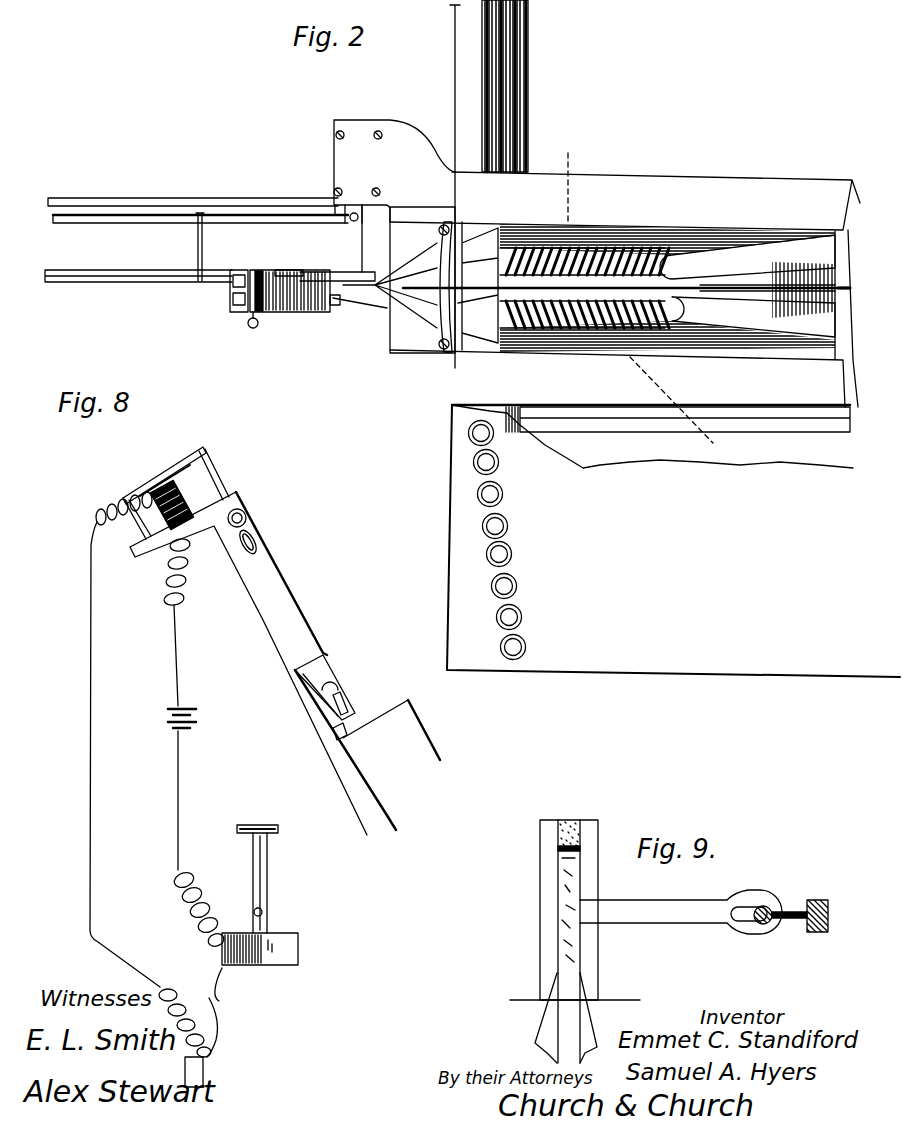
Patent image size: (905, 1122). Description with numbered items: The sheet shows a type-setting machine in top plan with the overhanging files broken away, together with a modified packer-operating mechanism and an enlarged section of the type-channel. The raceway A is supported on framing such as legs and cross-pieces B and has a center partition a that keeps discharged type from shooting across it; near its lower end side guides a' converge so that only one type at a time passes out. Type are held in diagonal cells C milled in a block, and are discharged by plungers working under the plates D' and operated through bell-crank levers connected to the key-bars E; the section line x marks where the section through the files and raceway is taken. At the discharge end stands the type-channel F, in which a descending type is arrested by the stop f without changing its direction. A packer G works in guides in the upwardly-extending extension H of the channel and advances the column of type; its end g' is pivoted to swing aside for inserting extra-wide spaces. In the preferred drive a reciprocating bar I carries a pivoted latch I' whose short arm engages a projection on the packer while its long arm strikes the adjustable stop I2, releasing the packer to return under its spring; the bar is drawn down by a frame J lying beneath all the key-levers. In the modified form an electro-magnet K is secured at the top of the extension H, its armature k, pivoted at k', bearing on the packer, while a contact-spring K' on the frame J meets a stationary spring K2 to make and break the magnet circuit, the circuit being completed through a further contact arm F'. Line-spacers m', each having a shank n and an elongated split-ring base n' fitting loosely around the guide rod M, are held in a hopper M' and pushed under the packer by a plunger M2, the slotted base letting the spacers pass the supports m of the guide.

In FIG. 2, the plates D' is at (645, 424).
In FIG. 2, the cross-pieces B is at (401, 186).
In FIG. 2, the key-bars E is at (528, 120).
In FIG. 8, the key-bars E is at (268, 901).
In FIG. 2, the section line x x is at (640, 298).
In FIG. 2, the side guides a' is at (478, 286).
In FIG. 9, the side guides a' is at (571, 1018).
In FIG. 2, the raceway A is at (651, 290).
In FIG. 9, the raceway A is at (573, 1018).
In FIG. 2, the cells C is at (667, 287).
In FIG. 2, the center partition a is at (767, 282).
In FIG. 2, the plunger M2 is at (168, 195).
In FIG. 9, the plunger M2 is at (818, 900).
In FIG. 2, the guide rod M is at (200, 230).
In FIG. 9, the guide rod M is at (763, 931).
In FIG. 2, the supports m is at (322, 199).
In FIG. 9, the supports m is at (789, 926).
In FIG. 2, the packer G is at (241, 270).
In FIG. 8, the packer G is at (320, 672).
In FIG. 2, the extension of the type-channel H is at (278, 312).
In FIG. 8, the extension of the type-channel H is at (283, 573).
In FIG. 2, the hopper M' is at (291, 261).
In FIG. 2, the line-spacers m' is at (360, 238).
In FIG. 9, the line-spacers m' is at (681, 917).
In FIG. 2, the shank n is at (223, 296).
In FIG. 9, the shank n is at (673, 895).
In FIG. 2, the reciprocating bar I is at (221, 317).
In FIG. 2, the latch I' is at (251, 333).
In FIG. 8, the latch I' is at (246, 505).
In FIG. 2, the type-channel F is at (337, 303).
In FIG. 9, the type-channel F is at (550, 910).
In FIG. 2, the frame J is at (381, 308).
In FIG. 8, the frame J is at (277, 957).
In FIG. 8, the armature k is at (176, 488).
In FIG. 8, the armature pivot k' is at (125, 731).
In FIG. 8, the electro-magnet K is at (172, 504).
In FIG. 8, the adjustable stop I2 is at (258, 535).
In FIG. 8, the pivoted end of the packer g' is at (346, 696).
In FIG. 8, the stop f is at (337, 735).
In FIG. 8, the contact arm F' is at (391, 734).
In FIG. 8, the contact-spring K' is at (229, 984).
In FIG. 8, the stationary spring K2 is at (213, 1054).
In FIG. 9, the split-ring base n' is at (760, 886).